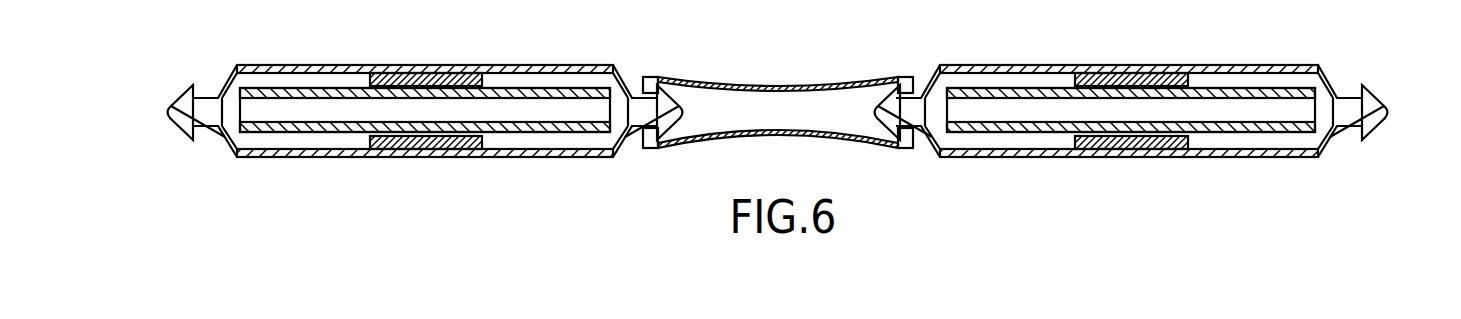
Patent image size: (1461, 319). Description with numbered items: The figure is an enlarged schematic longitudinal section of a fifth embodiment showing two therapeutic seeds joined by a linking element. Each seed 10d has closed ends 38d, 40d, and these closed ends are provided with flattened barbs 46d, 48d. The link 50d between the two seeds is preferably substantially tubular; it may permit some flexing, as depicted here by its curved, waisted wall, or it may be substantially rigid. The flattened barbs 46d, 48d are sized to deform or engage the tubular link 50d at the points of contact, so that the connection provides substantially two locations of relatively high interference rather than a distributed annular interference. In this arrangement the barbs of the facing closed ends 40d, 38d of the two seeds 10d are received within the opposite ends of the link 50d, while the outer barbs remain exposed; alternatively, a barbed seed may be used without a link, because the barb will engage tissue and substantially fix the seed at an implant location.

The seed 10d is at (413, 65).
The closed end 38d is at (233, 70).
The closed end 40d is at (619, 72).
The flattened barb 46d is at (183, 98).
The flattened barb 48d is at (674, 118).
The link 50d is at (781, 83).